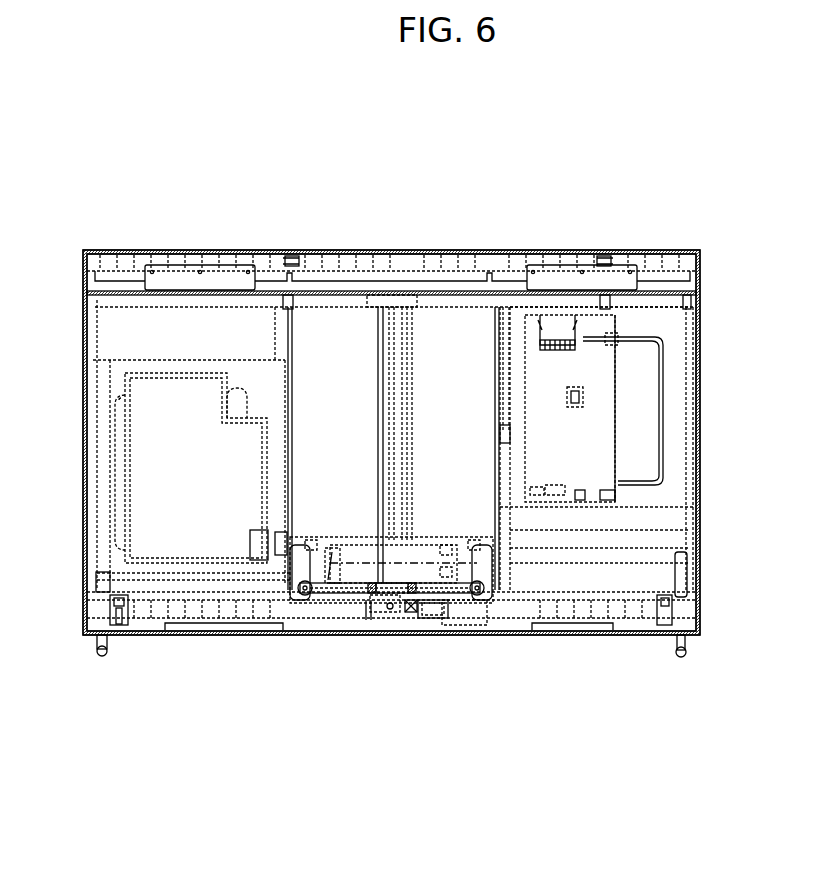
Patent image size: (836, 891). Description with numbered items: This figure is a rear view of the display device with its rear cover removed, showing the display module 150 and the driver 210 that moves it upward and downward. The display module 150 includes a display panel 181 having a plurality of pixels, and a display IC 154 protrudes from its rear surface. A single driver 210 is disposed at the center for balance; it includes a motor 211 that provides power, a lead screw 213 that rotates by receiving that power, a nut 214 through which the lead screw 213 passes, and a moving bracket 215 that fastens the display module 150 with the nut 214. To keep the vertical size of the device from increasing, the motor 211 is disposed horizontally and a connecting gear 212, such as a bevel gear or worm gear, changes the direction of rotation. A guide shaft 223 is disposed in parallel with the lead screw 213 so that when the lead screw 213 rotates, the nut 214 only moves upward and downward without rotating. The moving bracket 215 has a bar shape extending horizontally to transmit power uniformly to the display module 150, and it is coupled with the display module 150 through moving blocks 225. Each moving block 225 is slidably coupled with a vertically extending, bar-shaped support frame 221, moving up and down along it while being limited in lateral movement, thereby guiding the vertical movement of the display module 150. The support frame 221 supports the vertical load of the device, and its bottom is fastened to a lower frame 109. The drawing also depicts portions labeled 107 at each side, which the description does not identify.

The side frame 107 is at (97, 441).
The lower frame 109 is at (215, 633).
The display module 150 is at (650, 528).
The display IC 154 is at (338, 590).
The display panel 181 is at (600, 383).
The driver 210 is at (417, 638).
The motor 211 is at (437, 600).
The connecting gear 212 is at (395, 573).
The lead screw 213 is at (420, 617).
The nut 214 is at (383, 622).
The moving bracket 215 is at (493, 636).
The support frame 221 is at (278, 318).
The guide shaft 223 is at (376, 318).
The moving block 225 is at (110, 595).